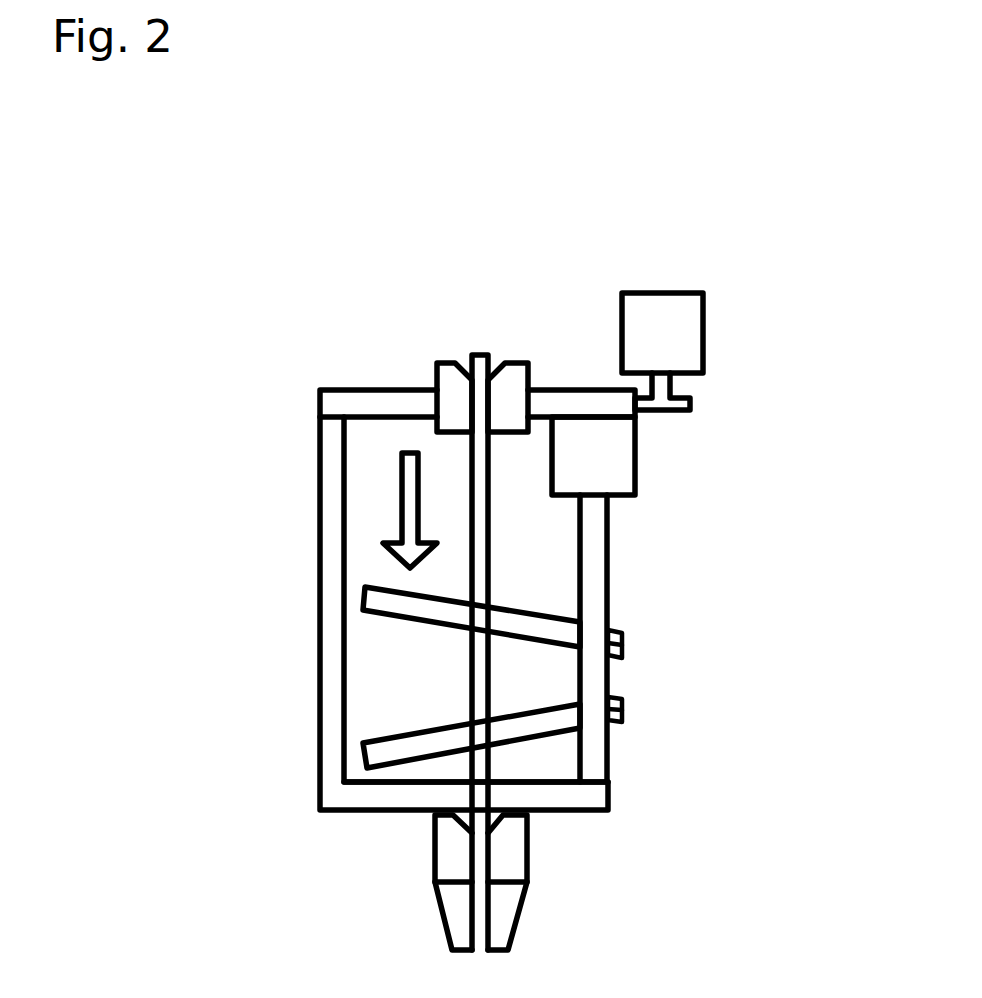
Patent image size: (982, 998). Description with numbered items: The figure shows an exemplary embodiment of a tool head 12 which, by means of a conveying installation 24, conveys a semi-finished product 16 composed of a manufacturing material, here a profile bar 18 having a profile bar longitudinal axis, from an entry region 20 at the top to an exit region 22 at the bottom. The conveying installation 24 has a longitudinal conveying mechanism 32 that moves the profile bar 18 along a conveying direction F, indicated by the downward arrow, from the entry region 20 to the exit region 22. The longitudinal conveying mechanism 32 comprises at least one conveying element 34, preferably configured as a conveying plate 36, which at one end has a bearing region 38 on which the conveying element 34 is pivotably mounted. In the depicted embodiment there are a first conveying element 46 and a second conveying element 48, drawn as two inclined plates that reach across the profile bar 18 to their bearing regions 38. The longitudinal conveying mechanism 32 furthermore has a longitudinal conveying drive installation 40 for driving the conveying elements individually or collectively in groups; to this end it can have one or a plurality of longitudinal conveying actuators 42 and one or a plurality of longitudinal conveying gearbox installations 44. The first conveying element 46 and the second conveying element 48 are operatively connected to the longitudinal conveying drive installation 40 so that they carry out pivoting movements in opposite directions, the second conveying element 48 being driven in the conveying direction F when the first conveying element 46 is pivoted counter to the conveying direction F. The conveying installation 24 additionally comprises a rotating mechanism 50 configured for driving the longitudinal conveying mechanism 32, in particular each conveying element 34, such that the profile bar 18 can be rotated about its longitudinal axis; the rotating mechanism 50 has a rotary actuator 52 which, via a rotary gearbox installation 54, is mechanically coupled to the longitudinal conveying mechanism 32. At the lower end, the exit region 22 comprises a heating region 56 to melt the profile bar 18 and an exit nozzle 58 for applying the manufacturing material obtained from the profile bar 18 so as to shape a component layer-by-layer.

The tool head 12 is at (226, 252).
The semi-finished product 16 is at (443, 610).
The profile bar 18 is at (480, 372).
The entry region 20 is at (437, 382).
The exit region 22 is at (428, 900).
The conveying installation 24 is at (259, 420).
The longitudinal conveying mechanism 32 is at (566, 290).
The conveying element 34 is at (692, 667).
The conveying plate 36 is at (617, 643).
The bearing region 38 is at (593, 638).
The longitudinal conveying drive installation 40 is at (686, 574).
The longitudinal conveying actuator 42 is at (617, 457).
The longitudinal conveying gearbox installation 44 is at (593, 563).
The first conveying element 46 is at (428, 607).
The second conveying element 48 is at (422, 745).
The rotating mechanism 50 is at (660, 287).
The rotary actuator 52 is at (653, 317).
The rotary gearbox installation 54 is at (609, 371).
The heating region 56 is at (508, 853).
The exit nozzle 58 is at (507, 910).
The conveying direction F is at (408, 493).